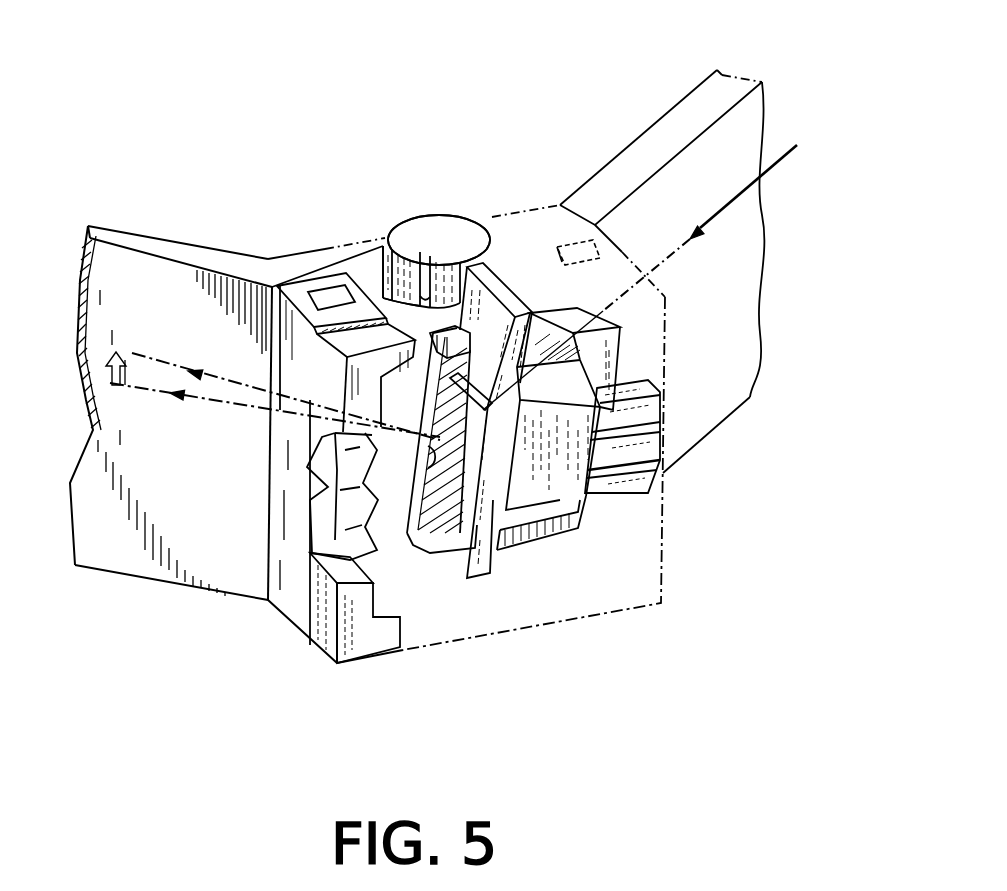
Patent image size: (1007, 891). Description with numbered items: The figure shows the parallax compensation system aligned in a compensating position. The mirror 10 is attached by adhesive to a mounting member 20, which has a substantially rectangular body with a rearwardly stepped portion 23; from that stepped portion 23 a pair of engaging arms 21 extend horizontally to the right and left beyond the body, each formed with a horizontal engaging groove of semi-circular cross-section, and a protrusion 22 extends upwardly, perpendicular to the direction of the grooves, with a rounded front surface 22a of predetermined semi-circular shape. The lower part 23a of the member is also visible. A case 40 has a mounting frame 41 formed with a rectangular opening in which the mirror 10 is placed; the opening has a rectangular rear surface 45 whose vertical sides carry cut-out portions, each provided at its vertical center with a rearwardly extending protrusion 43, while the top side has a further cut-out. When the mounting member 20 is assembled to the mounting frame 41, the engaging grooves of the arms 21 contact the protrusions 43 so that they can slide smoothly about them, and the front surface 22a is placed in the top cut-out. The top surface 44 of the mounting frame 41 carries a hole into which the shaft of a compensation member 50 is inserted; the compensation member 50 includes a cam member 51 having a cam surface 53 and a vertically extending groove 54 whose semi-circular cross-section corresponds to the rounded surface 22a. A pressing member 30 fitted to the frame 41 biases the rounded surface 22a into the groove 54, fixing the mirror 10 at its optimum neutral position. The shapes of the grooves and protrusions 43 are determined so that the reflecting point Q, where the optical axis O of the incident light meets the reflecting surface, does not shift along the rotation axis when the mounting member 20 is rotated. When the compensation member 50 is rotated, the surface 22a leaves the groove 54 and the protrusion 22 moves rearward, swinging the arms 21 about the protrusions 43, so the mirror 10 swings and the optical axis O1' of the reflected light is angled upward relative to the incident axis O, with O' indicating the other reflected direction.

The mirror 10 is at (403, 500).
The mounting member 20 is at (553, 570).
The engaging arm 21 is at (660, 462).
The protrusion 22 is at (507, 285).
The front surface of protrusion 22a is at (545, 253).
The rearwardly stepped portion 23 is at (515, 510).
The lower plate 23a is at (513, 427).
The pressing member 30 is at (318, 330).
The case 40 is at (180, 220).
The mounting frame 41 is at (331, 225).
The protrusion 43 is at (307, 490).
The top surface of mounting frame 44 is at (565, 220).
The rectangular rear surface 45 is at (366, 650).
The compensation member 50 is at (433, 196).
The cam member 51 is at (408, 227).
The cam surface 53 is at (385, 242).
The groove 54 is at (422, 252).
The optical axis O is at (645, 277).
The reflected optical axis O' is at (275, 422).
The optical axis of reflected light O1' is at (273, 369).
The reflecting point Q is at (420, 472).